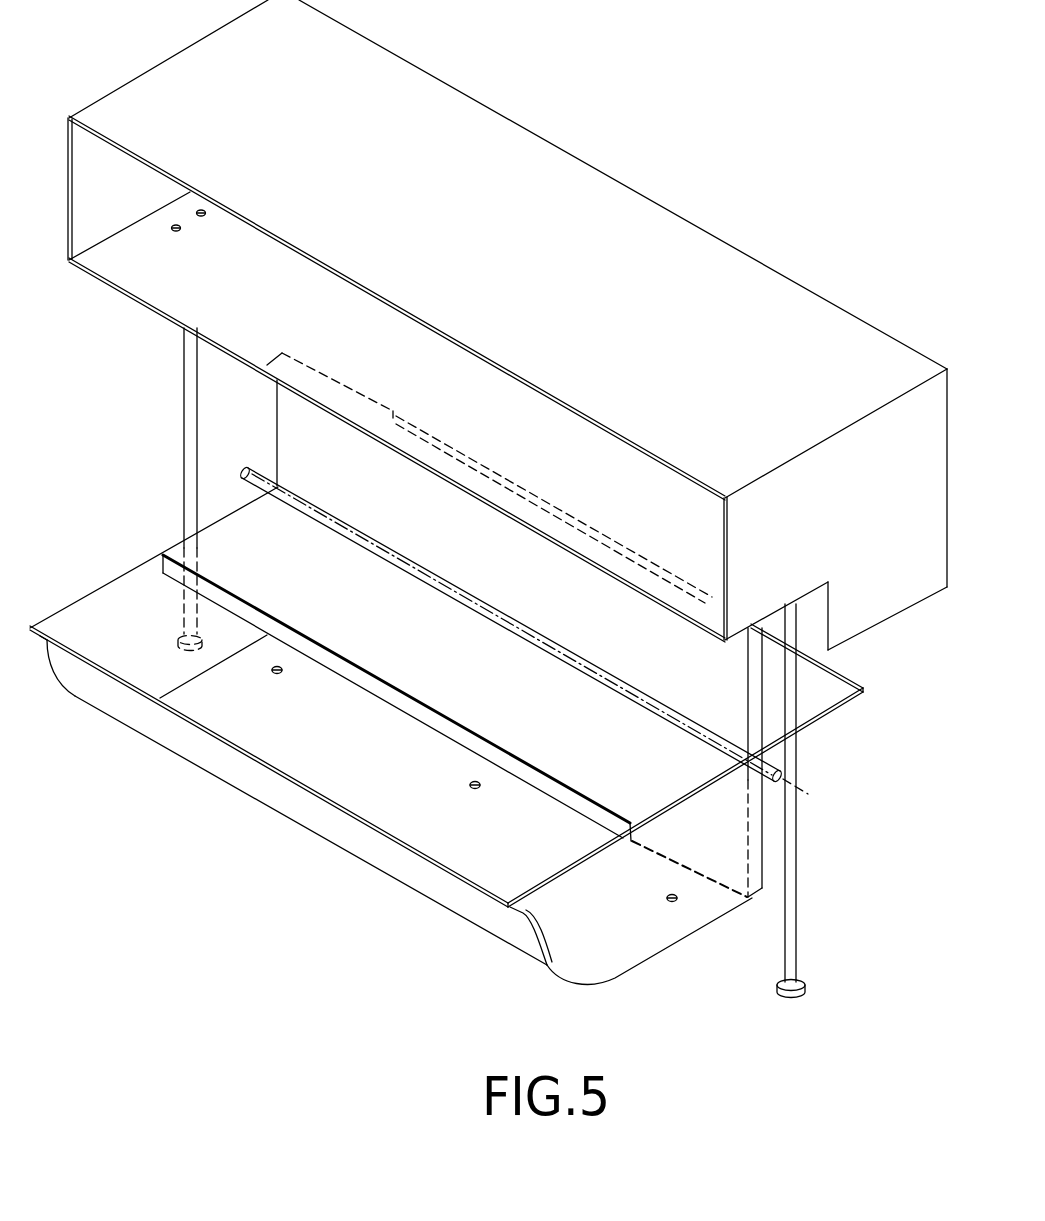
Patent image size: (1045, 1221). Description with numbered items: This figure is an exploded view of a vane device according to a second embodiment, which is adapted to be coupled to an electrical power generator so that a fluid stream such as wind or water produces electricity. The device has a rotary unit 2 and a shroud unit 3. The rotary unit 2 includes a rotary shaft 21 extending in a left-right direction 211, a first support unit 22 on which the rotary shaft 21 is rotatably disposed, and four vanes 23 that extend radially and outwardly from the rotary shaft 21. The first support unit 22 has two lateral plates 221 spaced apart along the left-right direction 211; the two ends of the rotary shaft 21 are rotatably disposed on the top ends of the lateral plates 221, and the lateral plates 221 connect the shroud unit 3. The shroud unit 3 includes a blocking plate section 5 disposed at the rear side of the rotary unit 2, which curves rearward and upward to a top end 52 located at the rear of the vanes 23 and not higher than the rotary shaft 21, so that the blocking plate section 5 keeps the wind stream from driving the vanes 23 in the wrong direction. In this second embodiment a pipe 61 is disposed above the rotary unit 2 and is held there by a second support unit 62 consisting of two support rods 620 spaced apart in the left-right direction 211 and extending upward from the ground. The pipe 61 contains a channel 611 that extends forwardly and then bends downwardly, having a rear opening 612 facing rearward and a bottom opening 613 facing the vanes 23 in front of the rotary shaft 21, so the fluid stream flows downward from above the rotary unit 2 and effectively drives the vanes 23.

The rotary unit 2 is at (850, 731).
The rotary shaft 21 is at (780, 777).
The left-right direction 211 is at (815, 797).
The first support unit 22 is at (88, 580).
The lateral plates 221 is at (137, 583).
The vanes 23 is at (240, 573).
The shroud unit 3 is at (243, 826).
The blocking plate section 5 is at (400, 865).
The top end 52 is at (462, 878).
The pipe 61 is at (600, 192).
The channel 611 is at (183, 291).
The rear opening 612 is at (73, 158).
The bottom opening 613 is at (893, 620).
The second support unit 62 is at (772, 945).
The support rods 620 is at (190, 370).